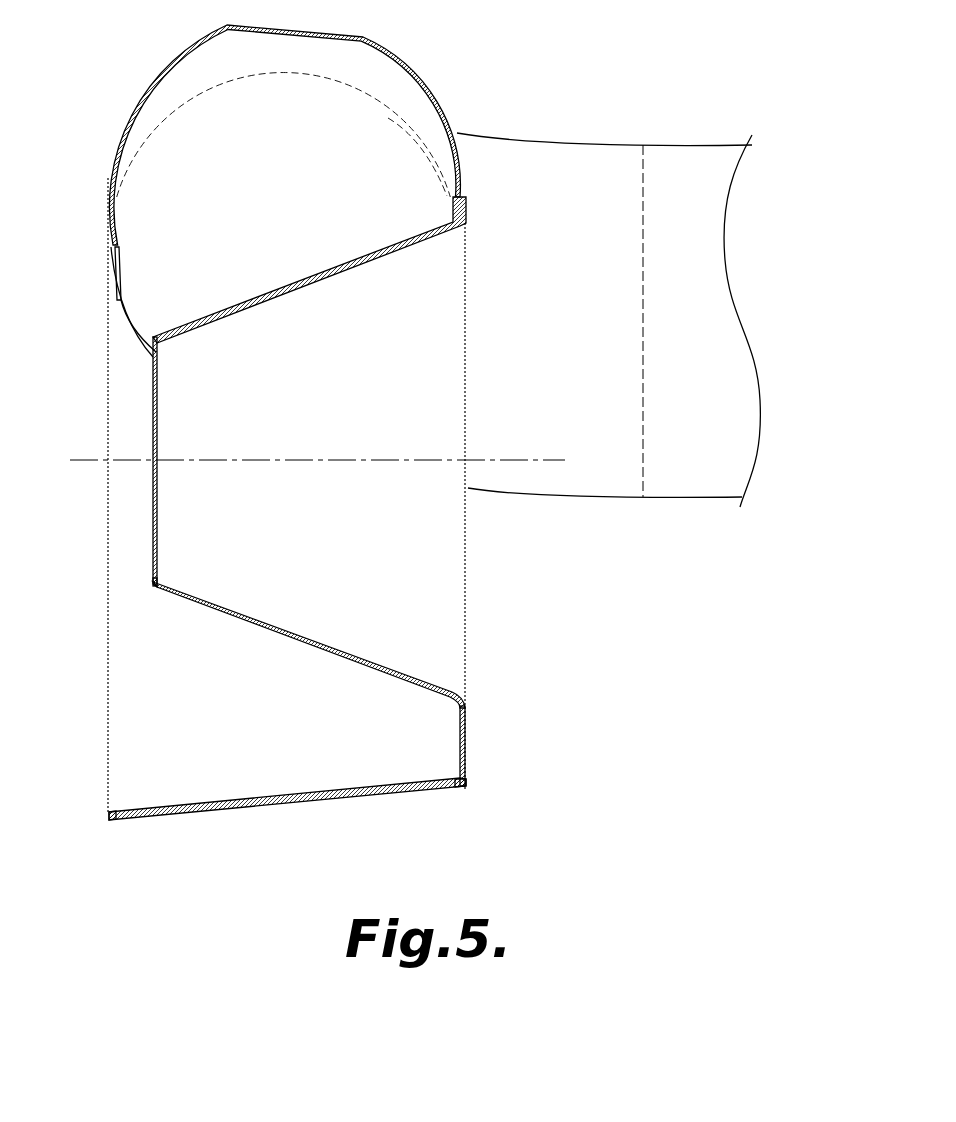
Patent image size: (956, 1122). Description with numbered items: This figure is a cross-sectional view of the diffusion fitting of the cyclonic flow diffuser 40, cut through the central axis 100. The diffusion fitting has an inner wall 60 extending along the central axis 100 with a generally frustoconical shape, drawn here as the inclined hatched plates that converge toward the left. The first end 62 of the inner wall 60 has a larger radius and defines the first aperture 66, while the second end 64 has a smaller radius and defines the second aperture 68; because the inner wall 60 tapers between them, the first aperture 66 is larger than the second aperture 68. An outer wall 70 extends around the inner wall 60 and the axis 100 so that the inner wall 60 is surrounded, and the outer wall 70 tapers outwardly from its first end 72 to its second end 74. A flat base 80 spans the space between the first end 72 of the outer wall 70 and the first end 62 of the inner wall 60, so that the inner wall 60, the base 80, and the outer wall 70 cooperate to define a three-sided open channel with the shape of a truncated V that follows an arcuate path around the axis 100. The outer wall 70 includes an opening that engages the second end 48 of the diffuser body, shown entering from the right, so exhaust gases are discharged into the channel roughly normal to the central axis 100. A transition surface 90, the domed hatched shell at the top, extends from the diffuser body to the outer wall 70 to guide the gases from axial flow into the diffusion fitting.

The cyclonic flow diffuser 40 is at (537, 84).
The second end of the body 48 is at (600, 146).
The inner wall 60 is at (247, 626).
The first end of the inner wall 62 is at (364, 657).
The second end of the inner wall 64 is at (158, 592).
The first aperture 66 is at (474, 552).
The second aperture 68 is at (150, 402).
The outer wall 70 is at (289, 808).
The first end of the outer wall 72 is at (436, 790).
The second end of the outer wall 74 is at (132, 818).
The flat base 80 is at (465, 737).
The transition surface 90 is at (410, 68).
The central axis 100 is at (80, 460).